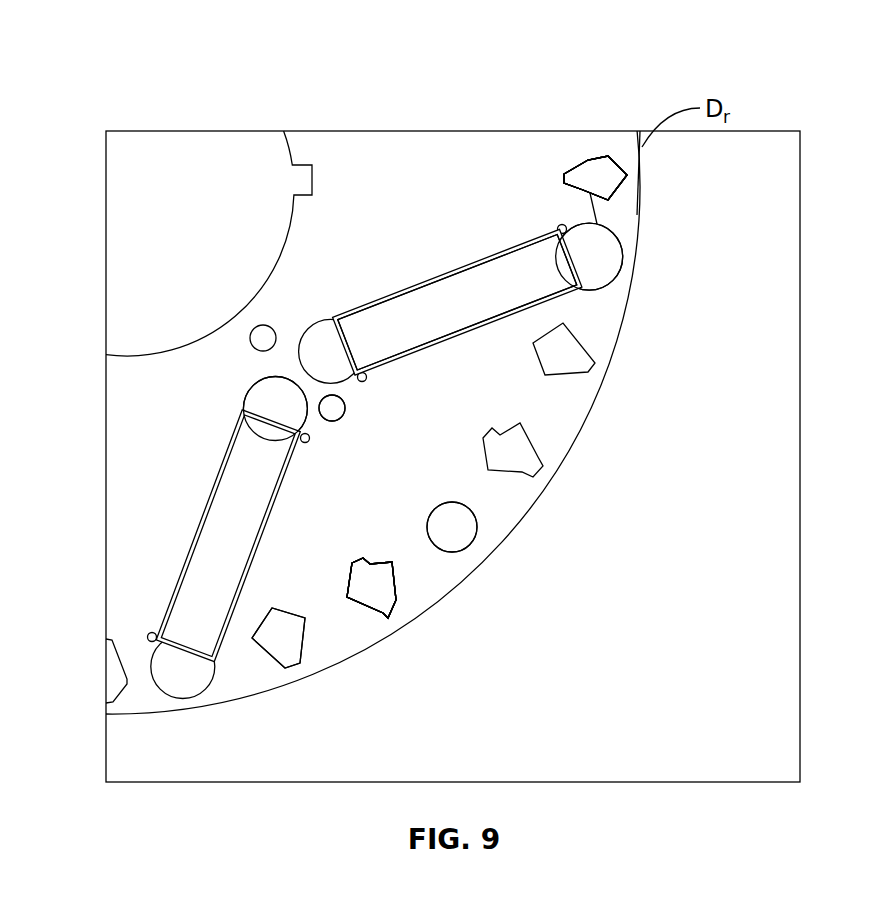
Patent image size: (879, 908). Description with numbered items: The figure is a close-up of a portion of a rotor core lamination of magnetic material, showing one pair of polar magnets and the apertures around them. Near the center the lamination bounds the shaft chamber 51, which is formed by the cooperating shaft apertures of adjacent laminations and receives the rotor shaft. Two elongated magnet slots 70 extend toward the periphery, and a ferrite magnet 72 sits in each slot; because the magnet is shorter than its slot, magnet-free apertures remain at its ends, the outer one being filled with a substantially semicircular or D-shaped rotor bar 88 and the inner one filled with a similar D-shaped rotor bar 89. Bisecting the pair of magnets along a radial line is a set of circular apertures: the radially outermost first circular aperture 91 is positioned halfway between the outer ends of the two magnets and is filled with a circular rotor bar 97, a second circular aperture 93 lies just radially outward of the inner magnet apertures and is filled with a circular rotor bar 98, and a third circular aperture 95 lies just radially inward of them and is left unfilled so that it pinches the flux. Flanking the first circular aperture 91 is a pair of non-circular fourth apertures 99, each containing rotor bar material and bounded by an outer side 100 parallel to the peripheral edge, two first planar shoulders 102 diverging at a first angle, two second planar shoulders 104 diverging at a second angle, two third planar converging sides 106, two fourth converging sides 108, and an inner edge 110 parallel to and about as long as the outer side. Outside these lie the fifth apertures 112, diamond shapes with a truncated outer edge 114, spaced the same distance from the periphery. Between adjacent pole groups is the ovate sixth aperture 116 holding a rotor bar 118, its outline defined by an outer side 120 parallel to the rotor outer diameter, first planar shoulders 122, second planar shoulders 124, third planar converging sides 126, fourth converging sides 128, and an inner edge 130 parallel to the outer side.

The shaft chamber 51 is at (162, 247).
The magnet slot 70 is at (512, 248).
The ferrite magnet 72 is at (443, 302).
The rotor bar 88 is at (168, 682).
The rotor bar 89 is at (268, 388).
The first circular aperture 91 is at (438, 500).
The second circular aperture 93 is at (346, 408).
The third circular aperture 95 is at (280, 328).
The circular rotor bar 97 is at (433, 525).
The circular rotor bar 98 is at (333, 413).
The fourth aperture 99 is at (533, 440).
The outer side 100 is at (395, 618).
The first planar shoulder 102 is at (400, 602).
The second planar shoulder 104 is at (395, 565).
The third planar converging side 106 is at (383, 558).
The fourth converging side 108 is at (365, 560).
The inner edge 110 is at (358, 562).
The fifth aperture 112 is at (596, 355).
The truncated outer edge 114 is at (293, 668).
The sixth aperture 116 is at (640, 185).
The rotor bar 118 is at (602, 172).
The outer side 120 is at (627, 182).
The first planar shoulder 122 is at (627, 200).
The second planar shoulder 124 is at (618, 158).
The third planar converging side 126 is at (620, 260).
The fourth converging side 128 is at (572, 165).
The inner edge 130 is at (563, 178).